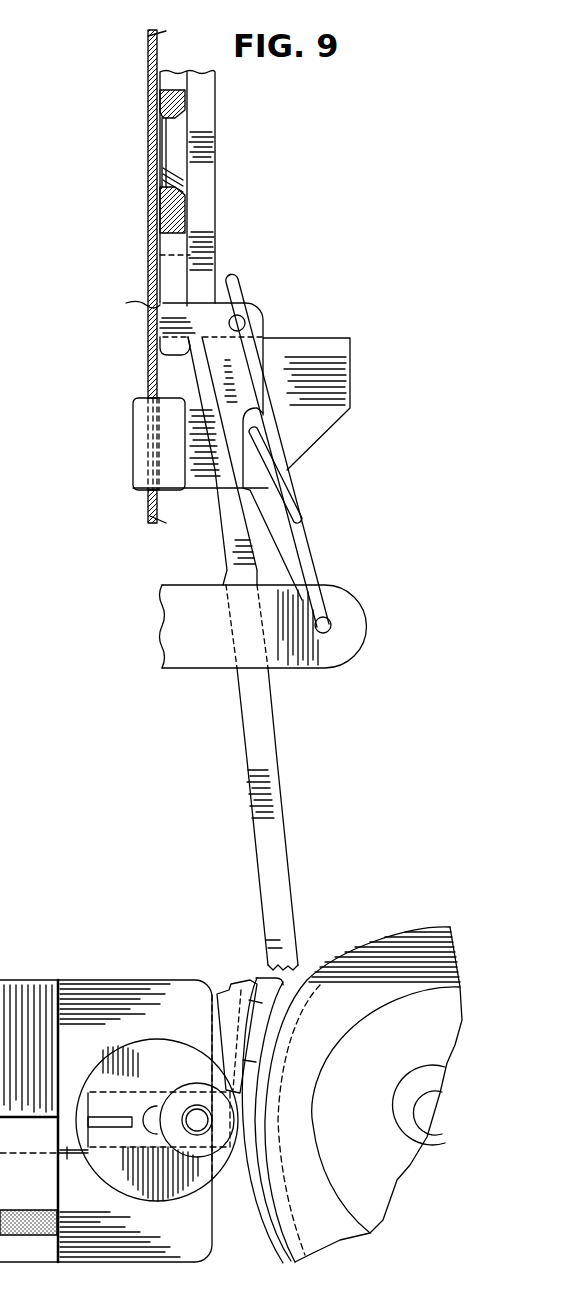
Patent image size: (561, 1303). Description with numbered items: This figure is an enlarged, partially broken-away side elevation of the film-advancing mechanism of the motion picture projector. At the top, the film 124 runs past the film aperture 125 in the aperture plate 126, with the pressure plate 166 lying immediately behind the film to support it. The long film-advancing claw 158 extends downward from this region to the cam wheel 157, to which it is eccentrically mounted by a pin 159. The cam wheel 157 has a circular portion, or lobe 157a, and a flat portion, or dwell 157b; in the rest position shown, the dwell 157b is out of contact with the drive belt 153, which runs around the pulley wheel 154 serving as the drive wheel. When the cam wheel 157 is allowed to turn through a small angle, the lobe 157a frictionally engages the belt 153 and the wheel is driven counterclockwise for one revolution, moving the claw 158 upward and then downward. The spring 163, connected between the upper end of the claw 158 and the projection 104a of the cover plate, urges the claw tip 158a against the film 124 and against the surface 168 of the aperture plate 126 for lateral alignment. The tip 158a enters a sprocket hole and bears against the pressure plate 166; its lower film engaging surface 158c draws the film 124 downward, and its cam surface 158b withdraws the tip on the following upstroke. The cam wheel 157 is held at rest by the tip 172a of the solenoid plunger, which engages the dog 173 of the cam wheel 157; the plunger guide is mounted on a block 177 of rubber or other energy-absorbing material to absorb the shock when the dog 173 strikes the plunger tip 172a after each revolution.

The pressure plate 166 is at (148, 67).
The film aperture 125 is at (175, 116).
The aperture plate 126 is at (183, 220).
The film 124 is at (160, 307).
The cam surface 158b is at (152, 310).
The claw tip 158a is at (160, 330).
The film engaging surface 158c is at (163, 345).
The spring 163 is at (297, 505).
The surface 168 is at (197, 477).
The projection 104a is at (355, 628).
The film-advancing claw 158 is at (265, 740).
The pulley wheel 154 is at (385, 947).
The belt 153 is at (283, 1243).
The dwell 157b is at (228, 1160).
The block 177 is at (10, 1235).
The cam wheel 157 is at (128, 1183).
The lobe 157a is at (175, 1083).
The pin 159 is at (193, 1127).
The dog 173 is at (125, 1117).
The tip of solenoid plunger 172a is at (67, 1153).